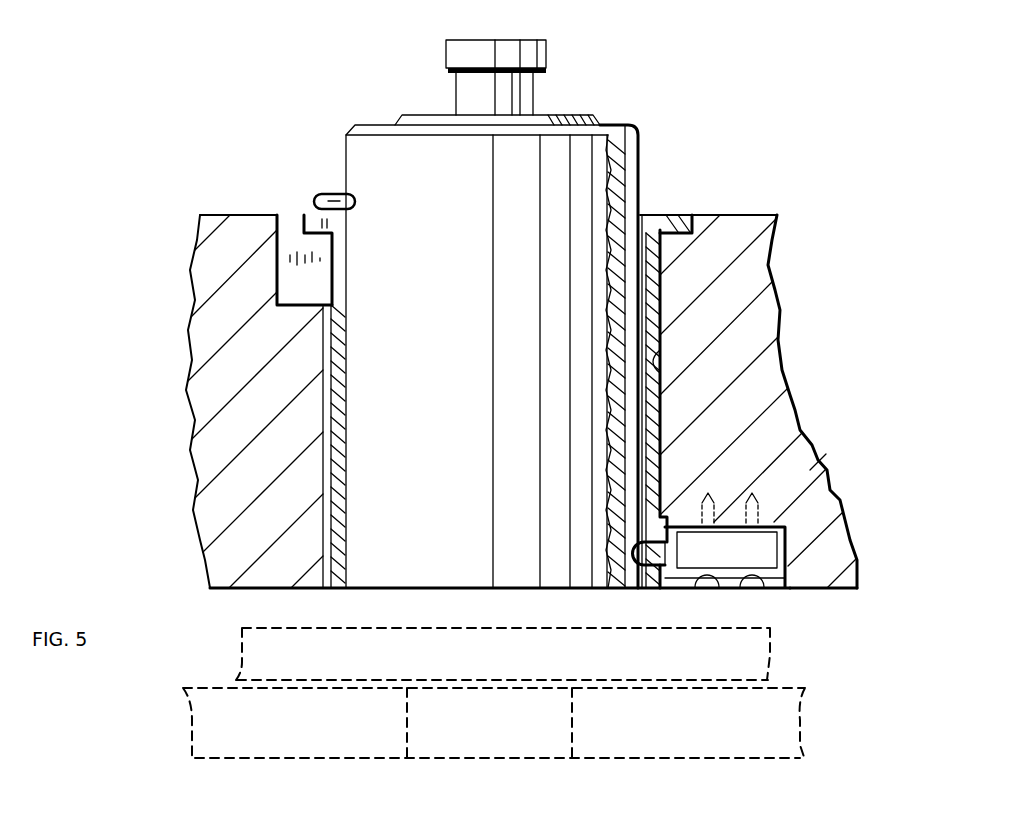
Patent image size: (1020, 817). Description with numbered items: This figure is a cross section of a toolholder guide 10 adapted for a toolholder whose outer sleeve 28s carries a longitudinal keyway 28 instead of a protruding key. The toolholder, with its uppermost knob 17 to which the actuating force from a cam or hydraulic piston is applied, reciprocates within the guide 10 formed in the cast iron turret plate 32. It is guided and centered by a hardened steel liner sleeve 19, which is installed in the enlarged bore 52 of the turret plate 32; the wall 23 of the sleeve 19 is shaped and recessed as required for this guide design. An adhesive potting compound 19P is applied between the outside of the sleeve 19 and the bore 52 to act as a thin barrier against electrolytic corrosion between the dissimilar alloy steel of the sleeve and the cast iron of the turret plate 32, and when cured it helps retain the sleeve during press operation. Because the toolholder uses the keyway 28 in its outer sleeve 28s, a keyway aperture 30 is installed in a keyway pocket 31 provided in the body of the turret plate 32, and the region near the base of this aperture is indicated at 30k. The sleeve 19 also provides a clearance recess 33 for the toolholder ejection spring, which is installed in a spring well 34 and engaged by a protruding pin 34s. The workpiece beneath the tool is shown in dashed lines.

The toolholder guide 10 is at (664, 209).
The knob 17 is at (532, 57).
The liner sleeve 19 is at (653, 322).
The adhesive potting compound 19P is at (325, 520).
The wall 23 is at (665, 395).
The keyway 28 is at (640, 158).
The outer sleeve 28s is at (634, 130).
The keyway aperture 30 is at (795, 410).
The wall base 30k is at (813, 588).
The keyway pocket 31 is at (765, 558).
The turret plate 32 is at (827, 457).
The clearance recess 33 is at (347, 250).
The spring well 34 is at (288, 247).
The protruding pin 34s is at (322, 193).
The enlarged bore 52 is at (667, 367).